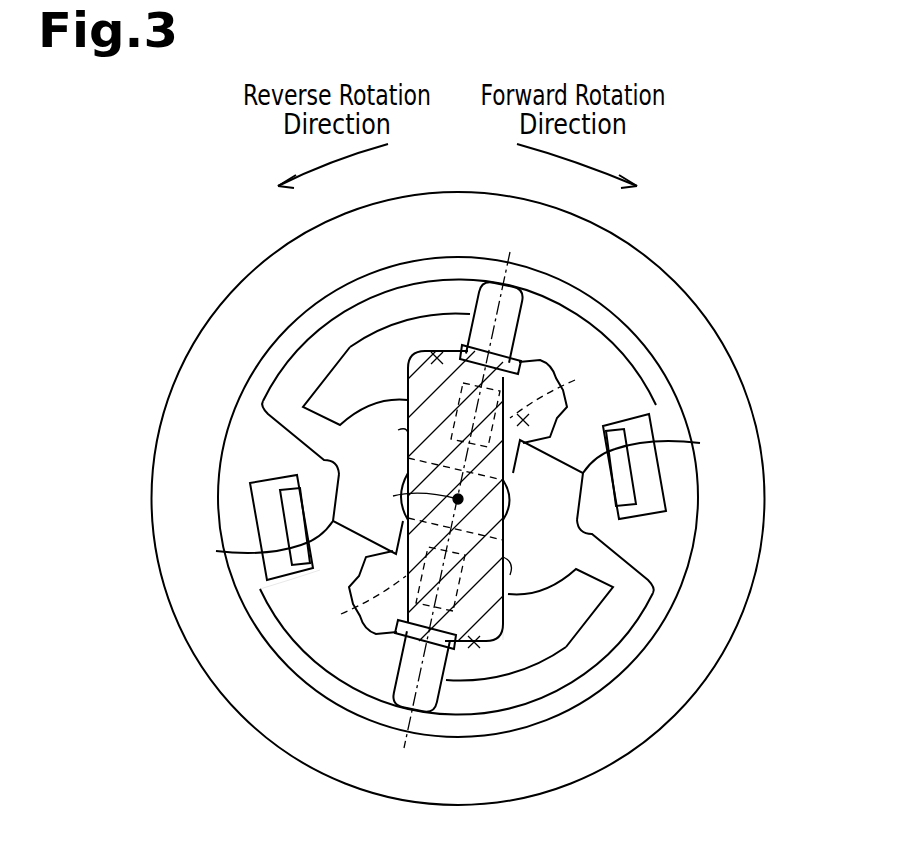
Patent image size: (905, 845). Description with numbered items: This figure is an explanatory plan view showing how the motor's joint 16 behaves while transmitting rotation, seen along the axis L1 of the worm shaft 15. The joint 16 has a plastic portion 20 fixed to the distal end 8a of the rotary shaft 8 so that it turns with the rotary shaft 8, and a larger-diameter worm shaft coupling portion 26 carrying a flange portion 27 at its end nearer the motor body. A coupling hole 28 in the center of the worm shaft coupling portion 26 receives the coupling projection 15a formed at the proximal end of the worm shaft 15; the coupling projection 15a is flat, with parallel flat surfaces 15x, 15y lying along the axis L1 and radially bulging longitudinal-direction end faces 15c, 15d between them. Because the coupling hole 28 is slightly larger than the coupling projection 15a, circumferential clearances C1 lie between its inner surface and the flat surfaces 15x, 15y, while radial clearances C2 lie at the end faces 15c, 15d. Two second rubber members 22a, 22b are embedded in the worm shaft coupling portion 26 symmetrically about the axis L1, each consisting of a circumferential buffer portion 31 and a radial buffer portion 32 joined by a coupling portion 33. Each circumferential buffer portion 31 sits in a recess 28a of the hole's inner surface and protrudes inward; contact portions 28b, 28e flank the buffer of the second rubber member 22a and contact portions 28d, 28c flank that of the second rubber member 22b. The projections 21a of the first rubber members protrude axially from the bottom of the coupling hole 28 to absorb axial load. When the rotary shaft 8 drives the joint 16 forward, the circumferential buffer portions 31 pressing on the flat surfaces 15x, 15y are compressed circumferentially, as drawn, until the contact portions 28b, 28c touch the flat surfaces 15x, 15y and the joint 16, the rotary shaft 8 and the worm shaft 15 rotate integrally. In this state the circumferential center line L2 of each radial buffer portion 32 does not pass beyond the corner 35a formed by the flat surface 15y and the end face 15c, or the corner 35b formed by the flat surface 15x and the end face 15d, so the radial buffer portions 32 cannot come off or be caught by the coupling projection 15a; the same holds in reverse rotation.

The joint 16 is at (234, 275).
The plastic portion 20 is at (655, 262).
The worm shaft coupling portion 26 is at (628, 338).
The flange portion 27 is at (713, 332).
The coupling portion 33 is at (347, 327).
The second rubber member 22a is at (307, 334).
The second rubber member 22b is at (632, 640).
The circumferential buffer portion 31 is at (338, 502).
The worm shaft 15 is at (300, 584).
The coupling projection 15a is at (290, 579).
The longitudinal-direction end face 15c is at (406, 372).
The longitudinal-direction end face 15d is at (505, 635).
The flat surface 15x is at (400, 430).
The flat surface 15y is at (512, 567).
The rotary shaft 8 is at (511, 509).
The distal end 8a is at (506, 488).
The coupling hole 28 is at (572, 374).
The recess 28a is at (216, 551).
The contact portion 28b is at (400, 400).
The contact portion 28c is at (516, 598).
The contact portion 28d is at (565, 412).
The contact portion 28e is at (355, 592).
The corner 35a is at (520, 368).
The corner 35b is at (392, 640).
The radial buffer portion 32 is at (482, 332).
The radial clearance C2 is at (437, 350).
The circumferential clearance C1 is at (532, 426).
The projection 21a is at (560, 385).
The circumferential center line L2 is at (508, 258).
The axis L1 is at (393, 496).